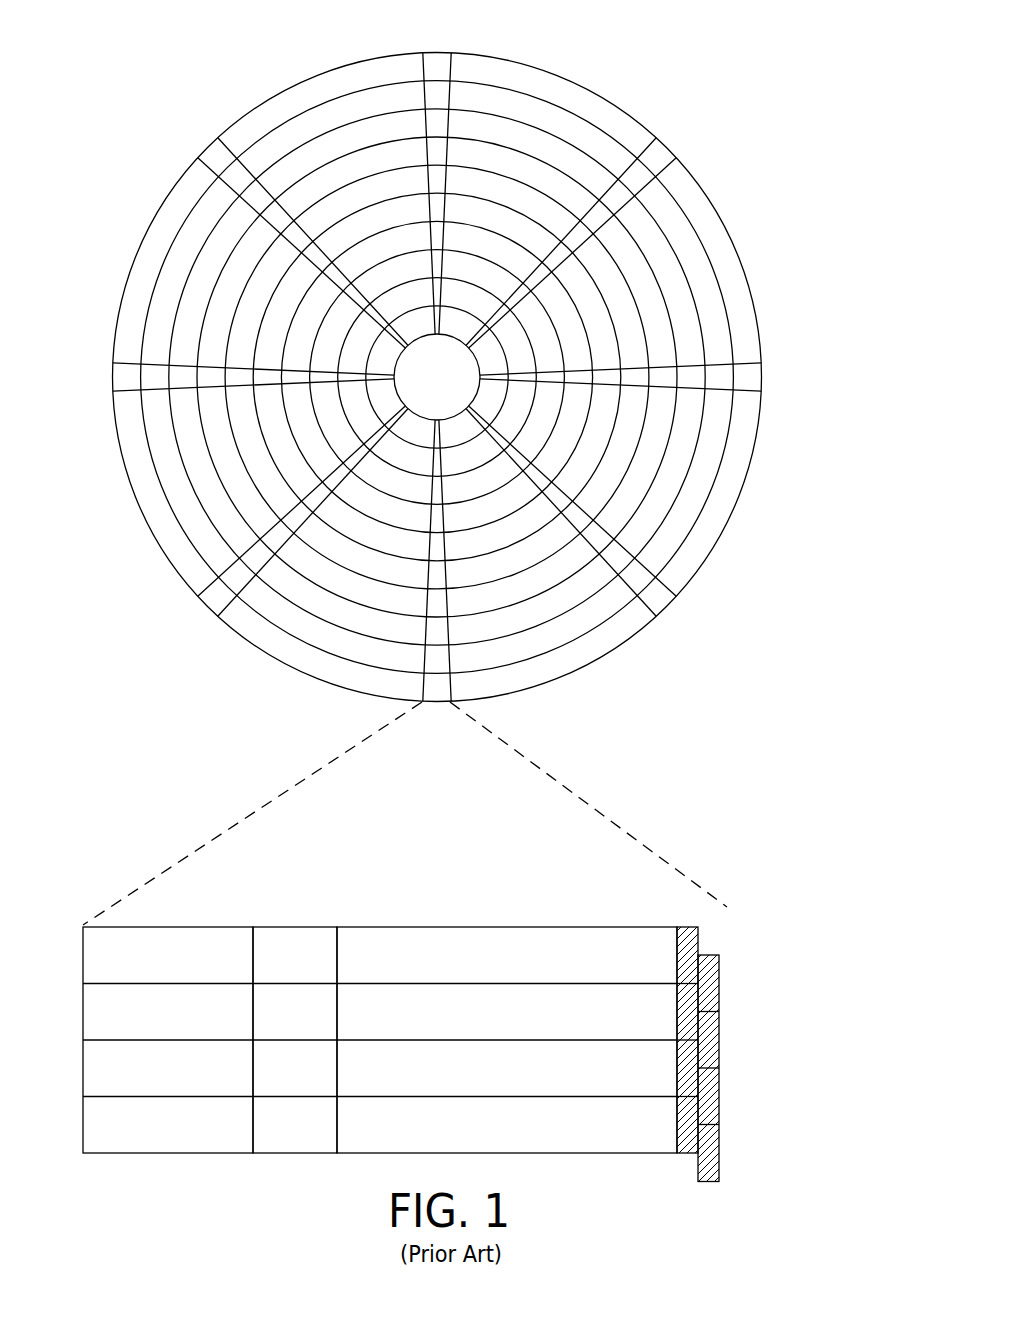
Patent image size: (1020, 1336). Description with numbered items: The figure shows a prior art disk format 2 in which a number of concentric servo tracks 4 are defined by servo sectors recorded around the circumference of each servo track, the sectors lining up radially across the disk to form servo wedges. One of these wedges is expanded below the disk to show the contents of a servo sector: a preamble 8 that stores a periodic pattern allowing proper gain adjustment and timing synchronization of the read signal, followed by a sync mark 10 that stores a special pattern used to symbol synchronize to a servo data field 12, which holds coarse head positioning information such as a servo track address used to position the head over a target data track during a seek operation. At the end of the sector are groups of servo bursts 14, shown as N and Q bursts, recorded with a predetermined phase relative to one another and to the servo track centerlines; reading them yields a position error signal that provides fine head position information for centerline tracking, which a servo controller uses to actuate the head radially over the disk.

The disk format 2 is at (194, 55).
The servo track 4 is at (546, 117).
The preamble 8 is at (176, 925).
The sync mark 10 is at (298, 925).
The servo data field 12 is at (495, 925).
The servo bursts 14 is at (718, 921).